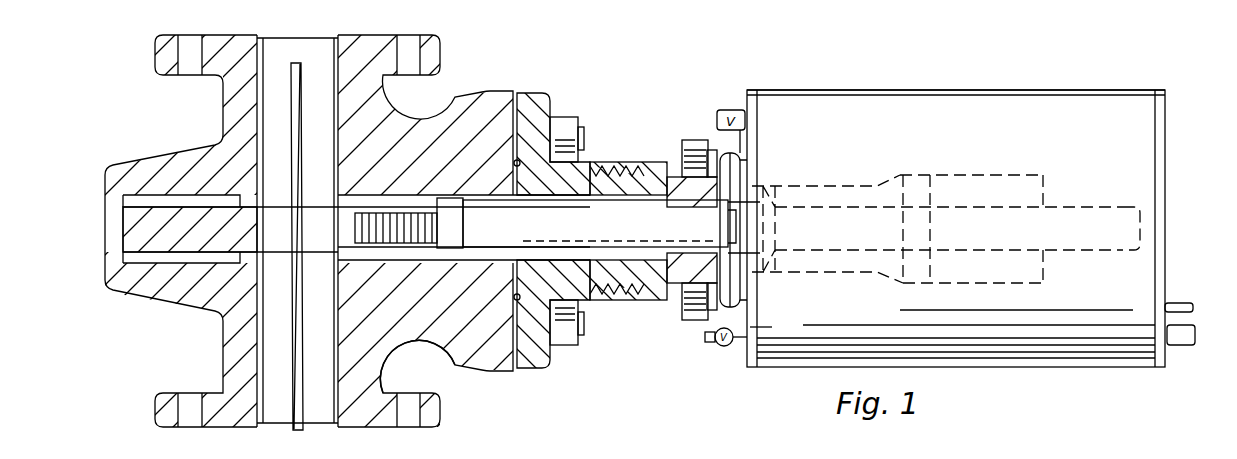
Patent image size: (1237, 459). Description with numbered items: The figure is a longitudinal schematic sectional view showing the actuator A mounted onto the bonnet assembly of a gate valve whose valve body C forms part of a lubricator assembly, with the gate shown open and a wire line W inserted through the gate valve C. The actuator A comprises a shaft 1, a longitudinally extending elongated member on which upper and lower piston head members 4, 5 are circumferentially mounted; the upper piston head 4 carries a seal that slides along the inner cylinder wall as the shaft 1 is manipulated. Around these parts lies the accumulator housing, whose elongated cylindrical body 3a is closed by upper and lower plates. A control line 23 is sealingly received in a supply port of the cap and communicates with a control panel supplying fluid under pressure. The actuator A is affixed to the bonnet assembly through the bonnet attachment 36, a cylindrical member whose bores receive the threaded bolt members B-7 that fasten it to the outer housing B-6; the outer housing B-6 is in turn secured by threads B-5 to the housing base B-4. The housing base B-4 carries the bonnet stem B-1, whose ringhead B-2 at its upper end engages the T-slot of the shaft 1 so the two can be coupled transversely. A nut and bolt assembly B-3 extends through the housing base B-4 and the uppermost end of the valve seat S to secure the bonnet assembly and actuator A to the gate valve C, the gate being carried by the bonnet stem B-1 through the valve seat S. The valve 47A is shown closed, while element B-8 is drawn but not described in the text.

The actuator A is at (1045, 83).
The elongated cylindrical body 3a is at (960, 90).
The shaft 1 is at (1088, 207).
The upper piston head 4 is at (917, 187).
The lower piston head 5 is at (770, 195).
The control line 23 is at (1182, 302).
The bonnet attachment 36 is at (735, 297).
The valve 47A is at (1185, 347).
The wire line W is at (290, 432).
The valve seat S is at (410, 313).
The valve body C is at (486, 392).
The bonnet stem B-1 is at (567, 232).
The bonnet head B-2 is at (723, 225).
The nut and bolt assembly B-3 is at (572, 347).
The housing base B-4 is at (542, 370).
The threads B-5 is at (637, 296).
The outer housing B-6 is at (615, 162).
The threaded bolt members B-7 is at (677, 140).
The packing nut B-8 is at (670, 150).